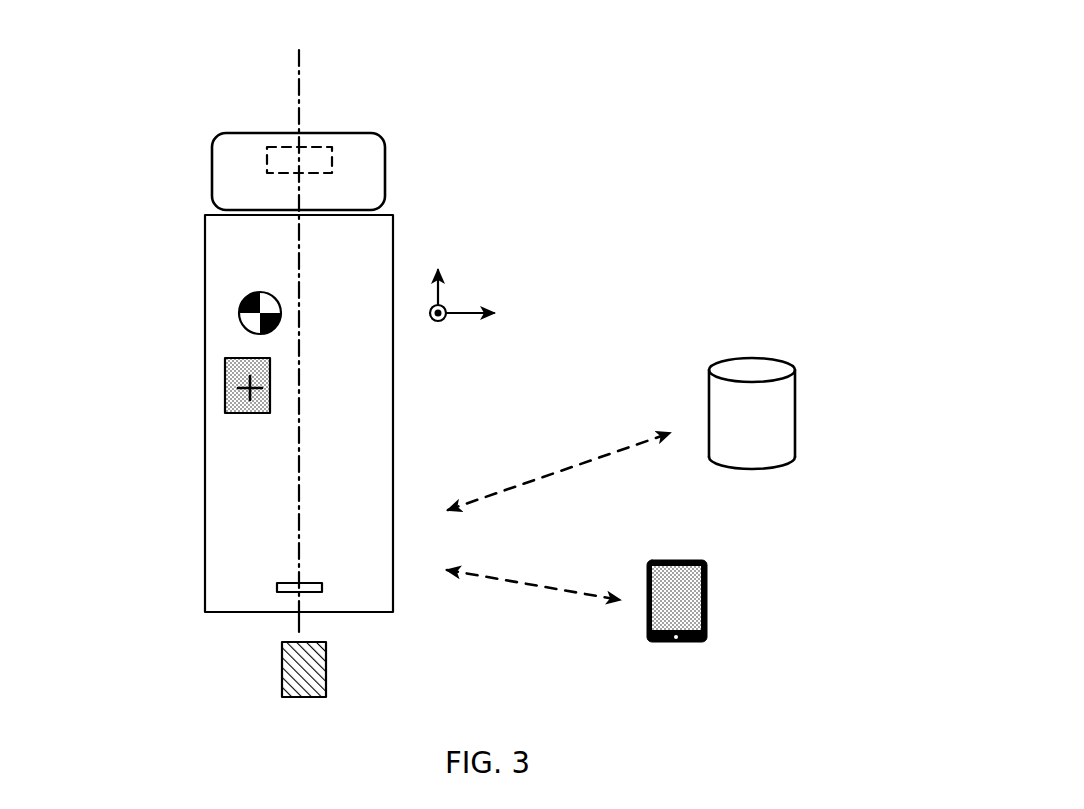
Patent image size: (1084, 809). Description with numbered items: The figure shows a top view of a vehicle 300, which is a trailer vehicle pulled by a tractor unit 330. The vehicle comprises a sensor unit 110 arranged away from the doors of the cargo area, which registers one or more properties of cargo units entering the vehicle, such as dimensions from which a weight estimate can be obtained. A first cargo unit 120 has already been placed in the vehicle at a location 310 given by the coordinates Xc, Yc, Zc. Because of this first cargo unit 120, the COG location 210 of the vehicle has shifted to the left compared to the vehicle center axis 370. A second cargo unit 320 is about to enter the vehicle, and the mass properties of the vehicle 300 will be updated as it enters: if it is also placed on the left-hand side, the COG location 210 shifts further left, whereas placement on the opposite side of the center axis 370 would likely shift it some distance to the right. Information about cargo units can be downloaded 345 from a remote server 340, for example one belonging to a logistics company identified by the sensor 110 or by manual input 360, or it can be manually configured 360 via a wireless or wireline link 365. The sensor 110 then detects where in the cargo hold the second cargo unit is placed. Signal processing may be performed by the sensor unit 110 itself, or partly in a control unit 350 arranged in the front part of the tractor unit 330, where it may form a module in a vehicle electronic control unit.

The vehicle 300 is at (124, 98).
The vehicle center axis 370 is at (302, 68).
The control unit 350 is at (313, 147).
The tractor unit 330 is at (385, 181).
The COG location 210 is at (241, 306).
The first cargo unit 120 is at (227, 385).
The location 310 is at (282, 393).
The sensor unit 110 is at (287, 582).
The second cargo unit 320 is at (283, 667).
The download 345 is at (559, 462).
The wireless or wireline link 365 is at (533, 571).
The remote server 340 is at (795, 418).
The manual input 360 is at (707, 588).